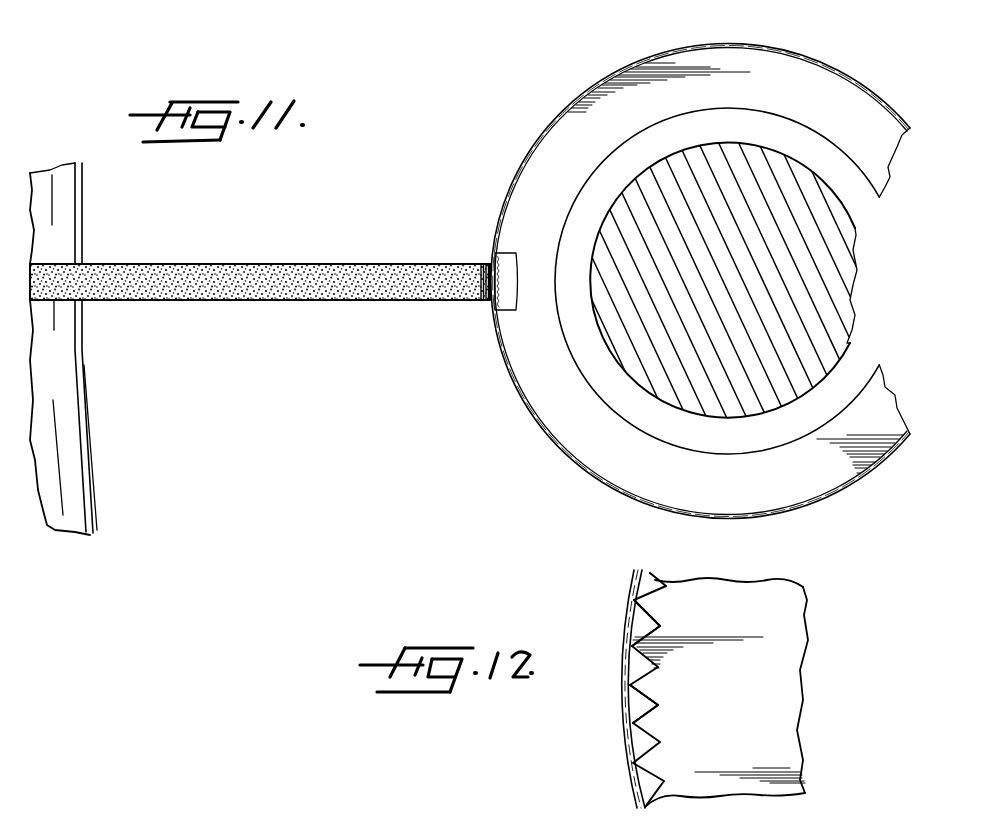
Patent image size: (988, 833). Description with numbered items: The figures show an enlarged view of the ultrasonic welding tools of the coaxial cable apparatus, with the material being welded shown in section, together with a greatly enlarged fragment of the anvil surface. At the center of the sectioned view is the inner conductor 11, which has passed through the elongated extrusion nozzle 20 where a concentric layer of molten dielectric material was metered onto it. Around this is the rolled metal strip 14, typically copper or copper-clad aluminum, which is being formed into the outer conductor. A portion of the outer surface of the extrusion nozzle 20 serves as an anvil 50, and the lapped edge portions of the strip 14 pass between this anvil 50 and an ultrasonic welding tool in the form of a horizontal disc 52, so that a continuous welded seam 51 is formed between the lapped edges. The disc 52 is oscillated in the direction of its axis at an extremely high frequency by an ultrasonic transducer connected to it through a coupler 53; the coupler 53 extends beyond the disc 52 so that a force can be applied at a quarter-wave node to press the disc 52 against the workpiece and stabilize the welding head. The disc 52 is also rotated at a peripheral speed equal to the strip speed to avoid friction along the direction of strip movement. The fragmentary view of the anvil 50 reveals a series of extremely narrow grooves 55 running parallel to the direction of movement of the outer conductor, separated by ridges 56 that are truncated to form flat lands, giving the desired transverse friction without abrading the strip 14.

In FIG. 11, the inner conductor 11 is at (717, 410).
In FIG. 11, the metal strip 14 is at (698, 46).
In FIG. 12, the metal strip 14 is at (630, 771).
In FIG. 11, the extrusion nozzle 20 is at (556, 428).
In FIG. 11, the anvil 50 is at (503, 309).
In FIG. 12, the anvil 50 is at (736, 591).
In FIG. 11, the welded seam 51 is at (488, 262).
In FIG. 11, the disc 52 is at (178, 236).
In FIG. 11, the coupler 53 is at (85, 353).
In FIG. 12, the grooves 55 is at (640, 633).
In FIG. 12, the ridges 56 is at (630, 719).